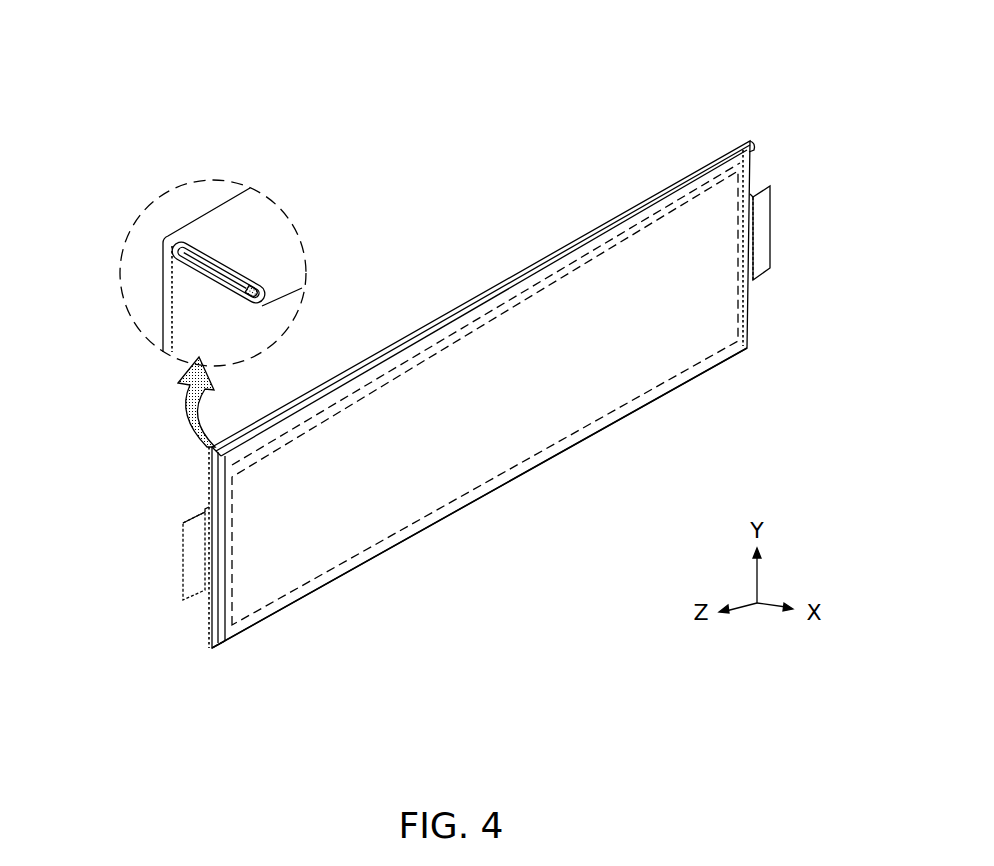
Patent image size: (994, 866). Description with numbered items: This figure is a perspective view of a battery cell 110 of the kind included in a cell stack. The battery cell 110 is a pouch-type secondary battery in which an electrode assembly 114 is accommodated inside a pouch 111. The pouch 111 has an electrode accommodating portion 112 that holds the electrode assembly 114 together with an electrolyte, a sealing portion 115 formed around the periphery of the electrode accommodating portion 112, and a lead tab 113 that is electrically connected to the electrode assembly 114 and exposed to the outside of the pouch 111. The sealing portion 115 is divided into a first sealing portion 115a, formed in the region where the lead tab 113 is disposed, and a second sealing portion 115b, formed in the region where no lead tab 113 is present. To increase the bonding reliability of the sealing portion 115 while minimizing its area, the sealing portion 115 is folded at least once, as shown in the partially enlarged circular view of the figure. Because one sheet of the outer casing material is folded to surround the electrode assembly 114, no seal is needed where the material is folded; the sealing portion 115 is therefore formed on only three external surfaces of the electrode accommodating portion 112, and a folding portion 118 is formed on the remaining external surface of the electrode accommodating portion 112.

The battery cell 110 is at (322, 43).
The pouch 111 is at (409, 510).
The electrode accommodating portion 112 is at (600, 268).
The lead tab 113 is at (204, 596).
The electrode assembly 114 is at (676, 381).
The sealing portion 115 is at (650, 86).
The first sealing portion 115a is at (182, 300).
The second sealing portion 115b is at (218, 227).
The folding portion 118 is at (503, 491).